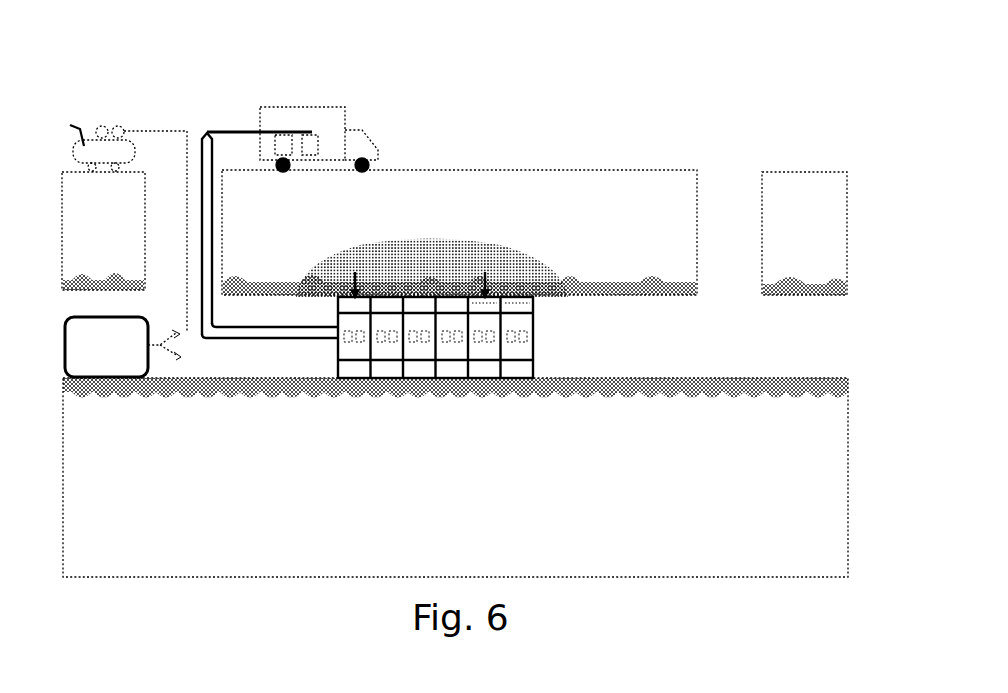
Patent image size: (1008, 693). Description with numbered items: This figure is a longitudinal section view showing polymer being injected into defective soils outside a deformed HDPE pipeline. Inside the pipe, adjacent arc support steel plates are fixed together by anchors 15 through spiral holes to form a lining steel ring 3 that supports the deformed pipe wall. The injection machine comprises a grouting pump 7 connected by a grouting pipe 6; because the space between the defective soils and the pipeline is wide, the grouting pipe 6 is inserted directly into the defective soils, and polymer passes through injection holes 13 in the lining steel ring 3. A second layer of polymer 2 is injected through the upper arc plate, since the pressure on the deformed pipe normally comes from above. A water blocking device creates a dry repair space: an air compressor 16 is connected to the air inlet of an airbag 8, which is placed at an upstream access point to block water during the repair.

The second layer of polymer 2 is at (458, 245).
The lining steel ring 3 is at (518, 335).
The grouting pipe 6 is at (315, 337).
The grouting pump 7 is at (322, 120).
The airbag 8 is at (135, 316).
The injection holes 13 is at (533, 313).
The anchors 15 is at (420, 363).
The air compressor 16 is at (123, 125).